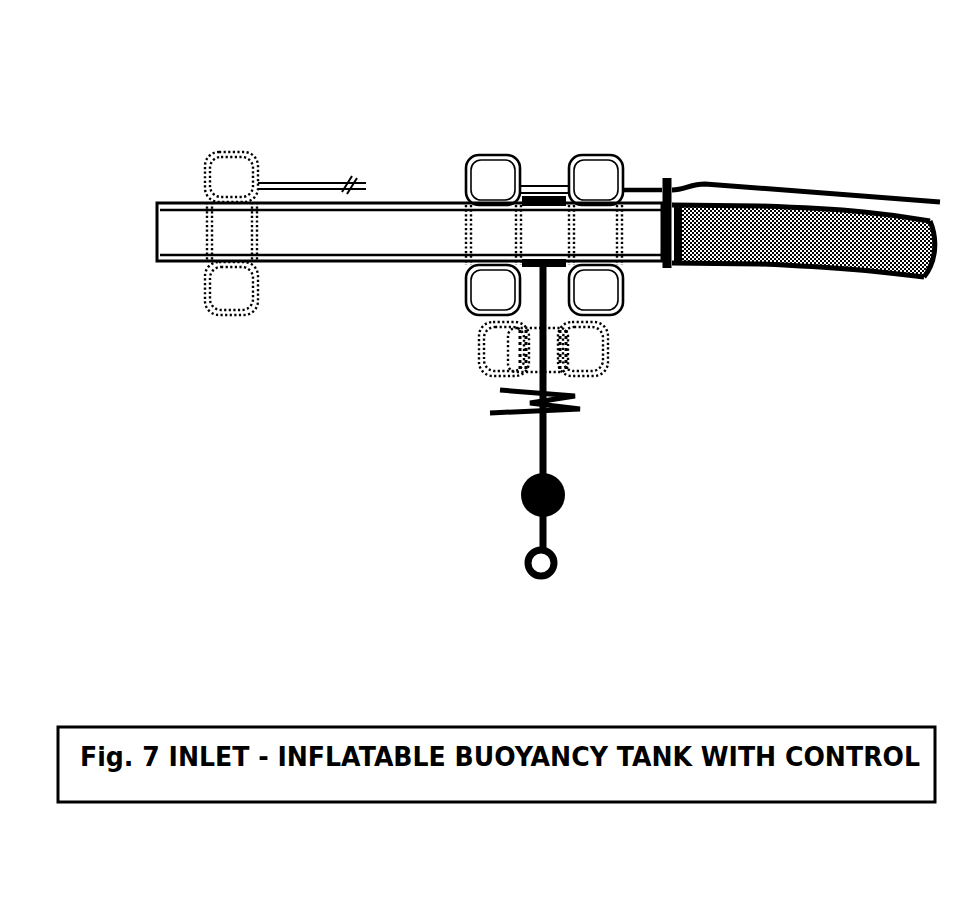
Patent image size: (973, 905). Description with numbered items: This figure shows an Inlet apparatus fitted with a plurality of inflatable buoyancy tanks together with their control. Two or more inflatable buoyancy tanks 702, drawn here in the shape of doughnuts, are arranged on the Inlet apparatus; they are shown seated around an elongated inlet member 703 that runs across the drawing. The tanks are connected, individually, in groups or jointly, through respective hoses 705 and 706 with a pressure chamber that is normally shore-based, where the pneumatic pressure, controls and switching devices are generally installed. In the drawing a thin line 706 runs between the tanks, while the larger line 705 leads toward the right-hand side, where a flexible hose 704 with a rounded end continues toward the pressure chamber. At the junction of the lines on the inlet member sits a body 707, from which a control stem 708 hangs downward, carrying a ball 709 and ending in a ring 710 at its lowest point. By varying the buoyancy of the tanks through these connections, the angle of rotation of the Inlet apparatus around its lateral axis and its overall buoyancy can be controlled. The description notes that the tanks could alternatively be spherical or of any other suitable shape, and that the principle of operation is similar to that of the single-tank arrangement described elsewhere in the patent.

The inflatable buoyancy tanks 702 is at (462, 147).
The inlet pipe 703 is at (142, 210).
The inflatable buoyancy tank hose 704 is at (797, 275).
The hose 705 is at (773, 183).
The hose 706 is at (318, 181).
The control valve body 707 is at (550, 225).
The control stem with spring 708 is at (515, 446).
The control ball weight 709 is at (505, 503).
The pull ring 710 is at (567, 553).